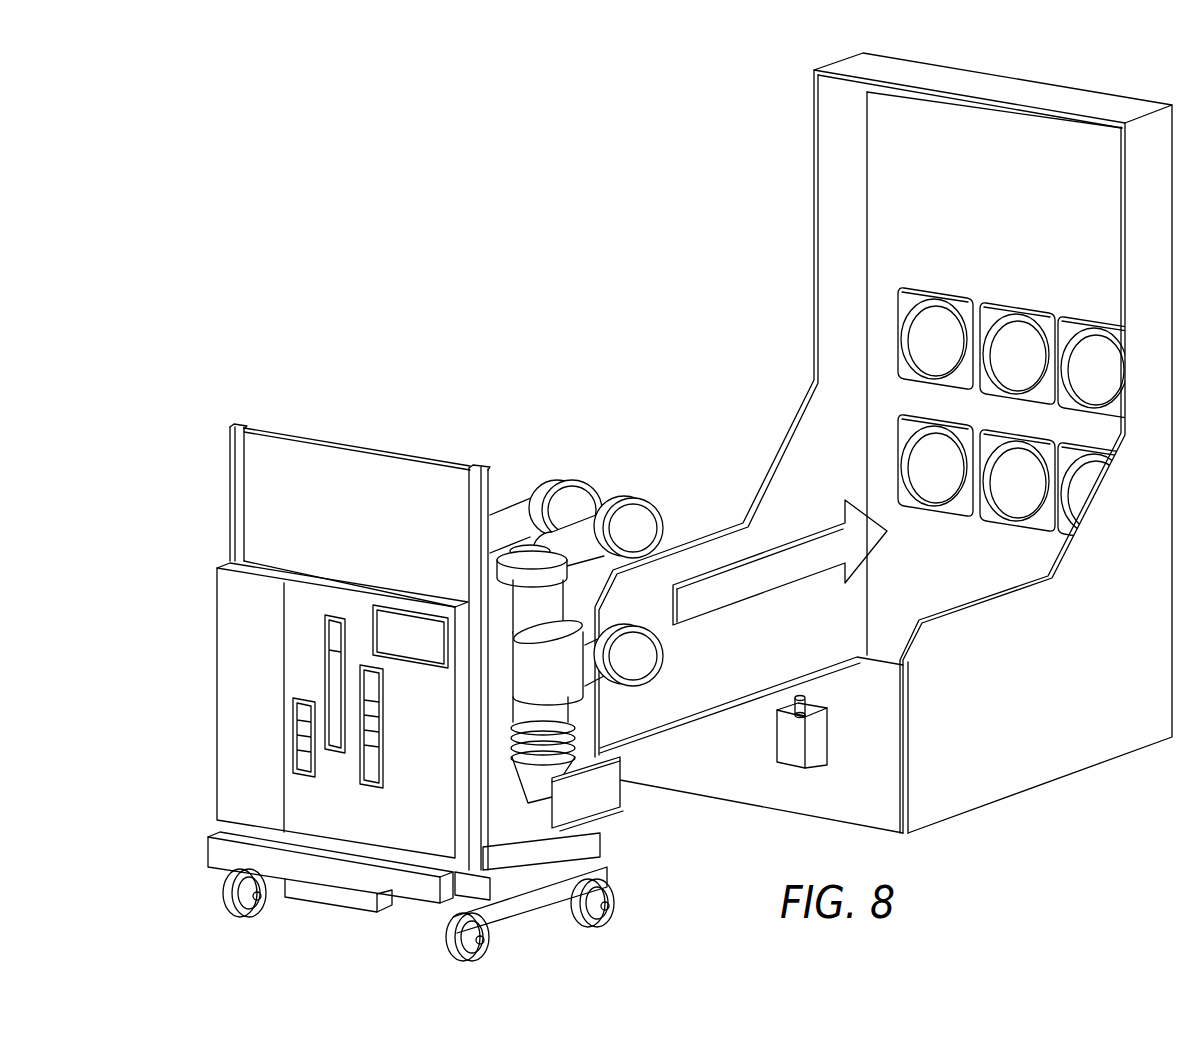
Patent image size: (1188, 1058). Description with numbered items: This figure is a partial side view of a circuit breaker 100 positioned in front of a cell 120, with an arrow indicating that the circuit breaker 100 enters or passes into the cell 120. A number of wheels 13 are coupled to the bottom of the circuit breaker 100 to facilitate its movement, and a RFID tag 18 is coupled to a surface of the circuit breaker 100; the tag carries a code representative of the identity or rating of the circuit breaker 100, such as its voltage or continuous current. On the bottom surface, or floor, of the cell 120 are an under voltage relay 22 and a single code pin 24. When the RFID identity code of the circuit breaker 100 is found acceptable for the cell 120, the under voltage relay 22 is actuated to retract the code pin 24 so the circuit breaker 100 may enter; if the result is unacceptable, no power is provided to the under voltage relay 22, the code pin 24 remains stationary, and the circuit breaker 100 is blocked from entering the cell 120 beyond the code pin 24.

The circuit breaker 100 is at (355, 482).
The cell 120 is at (898, 183).
The wheels 13 is at (228, 894).
The RFID tag 18 is at (322, 895).
The under voltage relay (UVR) 22 is at (788, 752).
The code pin 24 is at (803, 695).